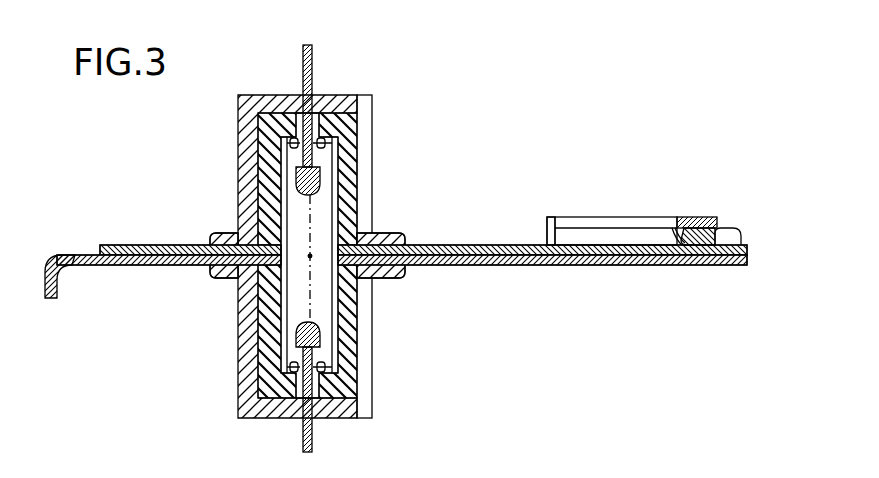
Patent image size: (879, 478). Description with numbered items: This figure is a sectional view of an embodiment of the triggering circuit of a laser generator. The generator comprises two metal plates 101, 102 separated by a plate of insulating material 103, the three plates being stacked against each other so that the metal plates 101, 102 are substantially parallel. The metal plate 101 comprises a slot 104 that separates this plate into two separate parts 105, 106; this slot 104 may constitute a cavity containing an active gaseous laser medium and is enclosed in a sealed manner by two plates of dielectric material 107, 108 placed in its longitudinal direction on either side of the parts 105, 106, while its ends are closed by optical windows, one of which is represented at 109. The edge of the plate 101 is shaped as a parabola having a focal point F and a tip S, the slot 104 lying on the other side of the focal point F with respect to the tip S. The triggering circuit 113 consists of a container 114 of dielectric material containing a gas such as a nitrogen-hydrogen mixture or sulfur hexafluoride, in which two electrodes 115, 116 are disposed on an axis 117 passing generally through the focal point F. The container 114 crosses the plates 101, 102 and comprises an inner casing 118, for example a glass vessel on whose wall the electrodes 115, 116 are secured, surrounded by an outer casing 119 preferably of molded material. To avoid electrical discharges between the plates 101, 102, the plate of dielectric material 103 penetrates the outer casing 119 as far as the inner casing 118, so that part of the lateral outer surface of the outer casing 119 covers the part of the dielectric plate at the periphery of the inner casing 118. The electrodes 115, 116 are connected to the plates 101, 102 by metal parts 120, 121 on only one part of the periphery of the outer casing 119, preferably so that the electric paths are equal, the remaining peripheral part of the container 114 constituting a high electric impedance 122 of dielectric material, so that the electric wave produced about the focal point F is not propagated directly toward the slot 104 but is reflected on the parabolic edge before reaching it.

The metal plate 101 is at (133, 244).
The metal plate 102 is at (128, 266).
The plate of insulating material 103 is at (68, 253).
The slot 104 is at (697, 215).
The part of the plate 105 is at (441, 245).
The part of the plate 106 is at (735, 240).
The plate of dielectric material 107 is at (597, 222).
The plate of dielectric material 108 is at (672, 224).
The optical window 109 is at (549, 218).
The triggering circuit 113 is at (238, 136).
The container 114 is at (357, 136).
The electrode 115 is at (311, 73).
The electrode 116 is at (313, 441).
The axis 117 is at (308, 307).
The inner casing 118 is at (328, 157).
The outer casing 119 is at (353, 185).
The metal part 120 is at (245, 187).
The metal part 121 is at (245, 338).
The high electric impedance 122 is at (403, 279).
The tip S is at (376, 254).
The focal point F is at (310, 256).